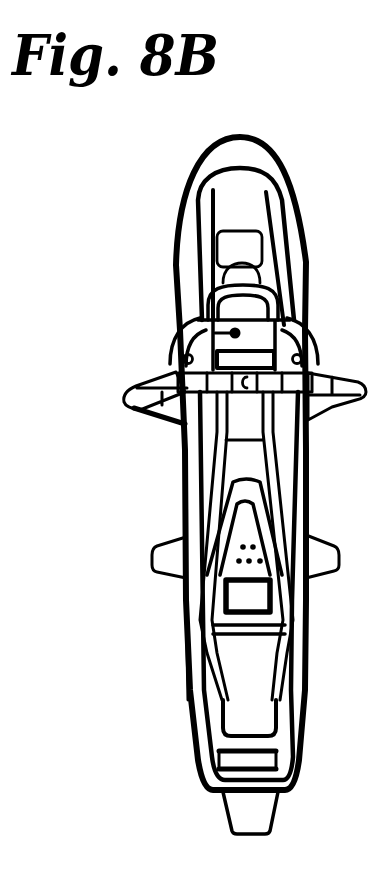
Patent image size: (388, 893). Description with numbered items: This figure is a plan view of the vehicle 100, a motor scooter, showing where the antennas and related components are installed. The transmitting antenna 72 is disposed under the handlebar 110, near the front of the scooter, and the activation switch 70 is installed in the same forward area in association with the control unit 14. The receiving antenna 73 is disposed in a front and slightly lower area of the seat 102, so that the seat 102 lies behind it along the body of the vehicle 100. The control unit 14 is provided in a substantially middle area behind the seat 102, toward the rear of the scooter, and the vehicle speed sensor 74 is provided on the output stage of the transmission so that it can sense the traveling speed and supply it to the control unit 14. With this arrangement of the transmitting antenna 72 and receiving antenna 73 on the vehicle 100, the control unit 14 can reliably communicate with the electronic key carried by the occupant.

The vehicle 100 is at (188, 186).
The activation switch 70 is at (188, 322).
The transmitting antenna 72 is at (319, 374).
The handlebar 110 is at (173, 410).
The receiving antenna 73 is at (236, 545).
The control unit 14 is at (285, 630).
The vehicle speed sensor 74 is at (192, 644).
The seat 102 is at (242, 714).